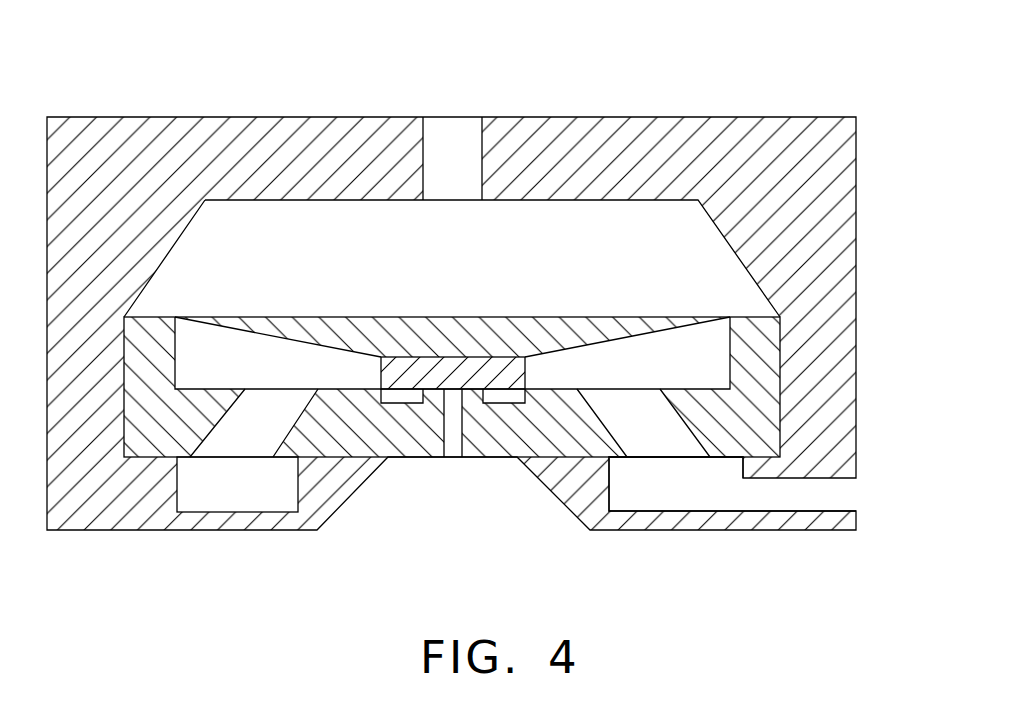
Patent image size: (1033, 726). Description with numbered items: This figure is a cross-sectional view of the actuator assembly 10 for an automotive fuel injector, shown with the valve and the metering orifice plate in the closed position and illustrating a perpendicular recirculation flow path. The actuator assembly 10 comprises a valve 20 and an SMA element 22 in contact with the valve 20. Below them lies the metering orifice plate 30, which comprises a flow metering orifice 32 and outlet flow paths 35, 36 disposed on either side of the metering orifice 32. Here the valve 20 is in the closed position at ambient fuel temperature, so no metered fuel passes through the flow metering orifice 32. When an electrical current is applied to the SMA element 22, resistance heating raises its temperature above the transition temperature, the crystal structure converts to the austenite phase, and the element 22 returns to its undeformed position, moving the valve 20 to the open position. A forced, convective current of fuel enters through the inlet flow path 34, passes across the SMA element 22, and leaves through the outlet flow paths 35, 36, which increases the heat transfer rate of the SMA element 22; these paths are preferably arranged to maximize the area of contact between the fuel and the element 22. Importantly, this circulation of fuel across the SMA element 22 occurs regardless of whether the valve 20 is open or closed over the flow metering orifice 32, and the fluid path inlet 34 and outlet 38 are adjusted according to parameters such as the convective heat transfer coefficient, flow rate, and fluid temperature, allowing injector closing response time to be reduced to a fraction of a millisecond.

The actuator assembly 10 is at (677, 62).
The valve 20 is at (455, 372).
The SMA element 22 is at (673, 328).
The metering orifice plate 30 is at (452, 408).
The flow metering orifice 32 is at (460, 437).
The inlet flow path 34 is at (453, 240).
The outlet flow path 35 is at (282, 397).
The outlet flow path 36 is at (625, 397).
The outlet 38 is at (720, 493).